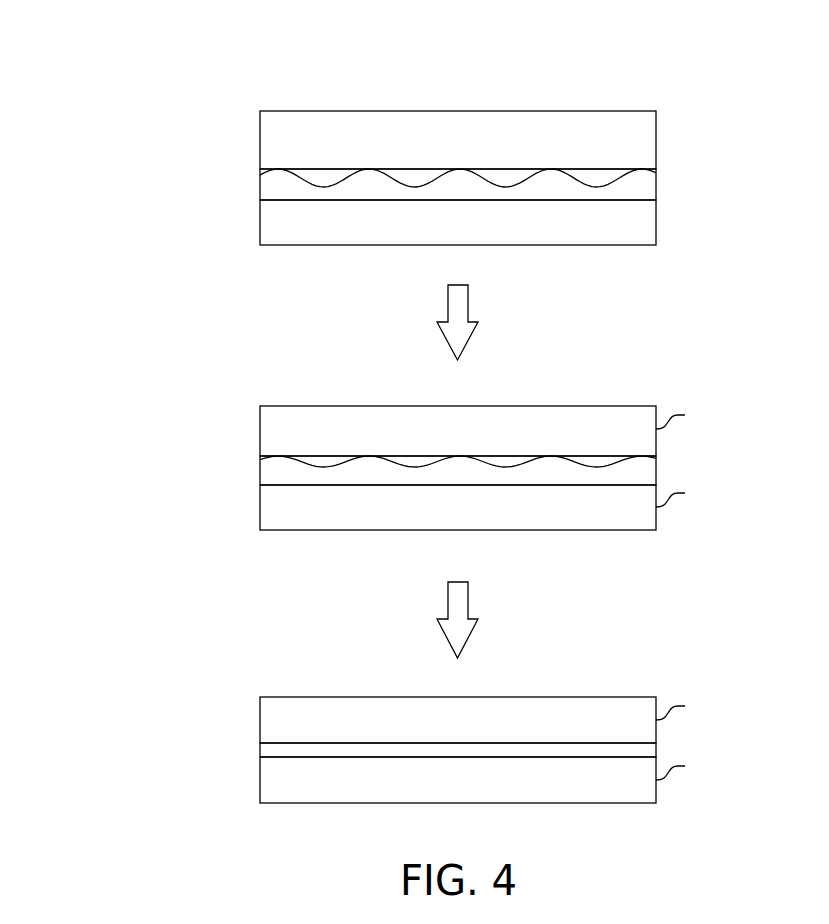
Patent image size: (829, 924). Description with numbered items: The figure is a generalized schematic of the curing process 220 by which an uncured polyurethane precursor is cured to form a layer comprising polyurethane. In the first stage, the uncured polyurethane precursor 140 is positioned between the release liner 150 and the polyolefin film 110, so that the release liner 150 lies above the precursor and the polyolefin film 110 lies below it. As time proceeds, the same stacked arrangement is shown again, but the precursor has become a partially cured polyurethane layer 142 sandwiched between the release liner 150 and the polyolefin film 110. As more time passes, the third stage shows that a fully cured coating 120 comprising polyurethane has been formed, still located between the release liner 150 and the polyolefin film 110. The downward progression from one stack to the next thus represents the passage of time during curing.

The method of forming a bonded structure 220 is at (398, 421).
The release liner 150 is at (656, 132).
The uncured polyurethane precursor 140 is at (260, 187).
The partially cured polyurethane layer 142 is at (260, 467).
The fully cured coating 120 is at (260, 750).
The polyolefin film 110 is at (656, 223).